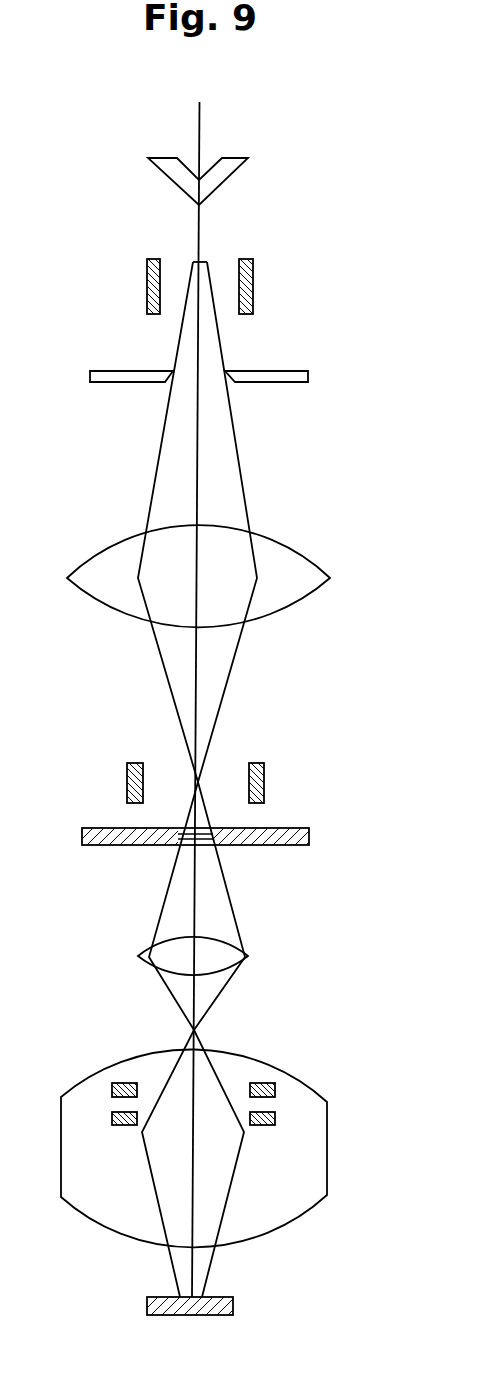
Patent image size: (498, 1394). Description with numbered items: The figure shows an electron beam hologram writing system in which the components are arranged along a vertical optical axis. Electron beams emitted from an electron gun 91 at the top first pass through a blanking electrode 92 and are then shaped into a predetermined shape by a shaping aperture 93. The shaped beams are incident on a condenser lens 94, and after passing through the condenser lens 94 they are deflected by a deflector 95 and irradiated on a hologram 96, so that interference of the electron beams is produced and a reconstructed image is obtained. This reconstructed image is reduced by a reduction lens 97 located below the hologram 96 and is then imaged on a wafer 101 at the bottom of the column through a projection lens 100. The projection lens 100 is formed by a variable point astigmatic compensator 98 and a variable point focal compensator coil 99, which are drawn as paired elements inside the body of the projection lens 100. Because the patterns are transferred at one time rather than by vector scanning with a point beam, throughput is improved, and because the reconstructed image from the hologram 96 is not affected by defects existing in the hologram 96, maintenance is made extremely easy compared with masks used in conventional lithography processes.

The electron gun 91 is at (223, 188).
The blanking electrode 92 is at (253, 287).
The shaping aperture 93 is at (310, 377).
The condenser lens 94 is at (294, 549).
The deflector 95 is at (264, 785).
The hologram 96 is at (310, 838).
The reduction lens 97 is at (236, 943).
The variable point astigmatic compensator 98 is at (276, 1093).
The variable point focal compensator coil 99 is at (276, 1122).
The projection lens 100 is at (327, 1167).
The wafer 101 is at (235, 1310).